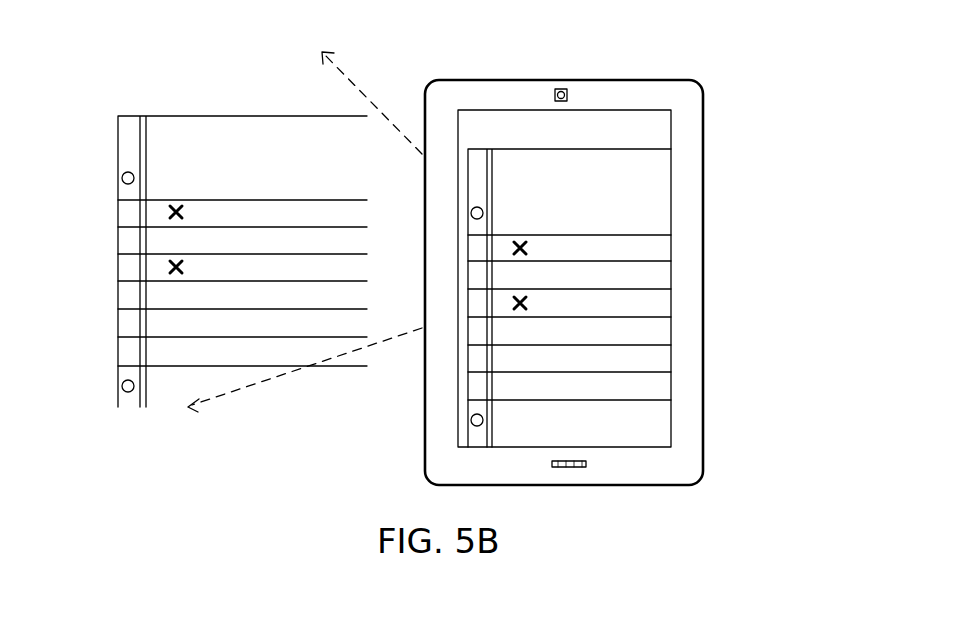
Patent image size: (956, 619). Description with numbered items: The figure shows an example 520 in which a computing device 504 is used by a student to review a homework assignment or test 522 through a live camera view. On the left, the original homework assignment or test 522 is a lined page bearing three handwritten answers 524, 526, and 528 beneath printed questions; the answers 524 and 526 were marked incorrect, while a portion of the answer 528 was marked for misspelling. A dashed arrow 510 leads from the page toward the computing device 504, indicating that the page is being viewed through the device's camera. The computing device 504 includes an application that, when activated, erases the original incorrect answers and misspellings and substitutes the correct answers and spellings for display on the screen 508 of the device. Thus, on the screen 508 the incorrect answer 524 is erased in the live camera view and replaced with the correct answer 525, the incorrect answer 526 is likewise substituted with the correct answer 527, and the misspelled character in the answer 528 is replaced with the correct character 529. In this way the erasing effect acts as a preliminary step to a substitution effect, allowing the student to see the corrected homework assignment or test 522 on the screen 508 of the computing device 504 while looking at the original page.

The example 520 is at (788, 80).
The homework assignment or test 522 is at (102, 132).
The handwritten answer 524 is at (180, 239).
The handwritten answer 526 is at (183, 296).
The handwritten answer 528 is at (253, 348).
The transfer of handwritten content to device 510 is at (295, 370).
The computing device 504 is at (703, 150).
The screen 508 is at (671, 447).
The correct answer 525 is at (605, 272).
The correct answer 527 is at (605, 332).
The correct character 529 is at (605, 383).